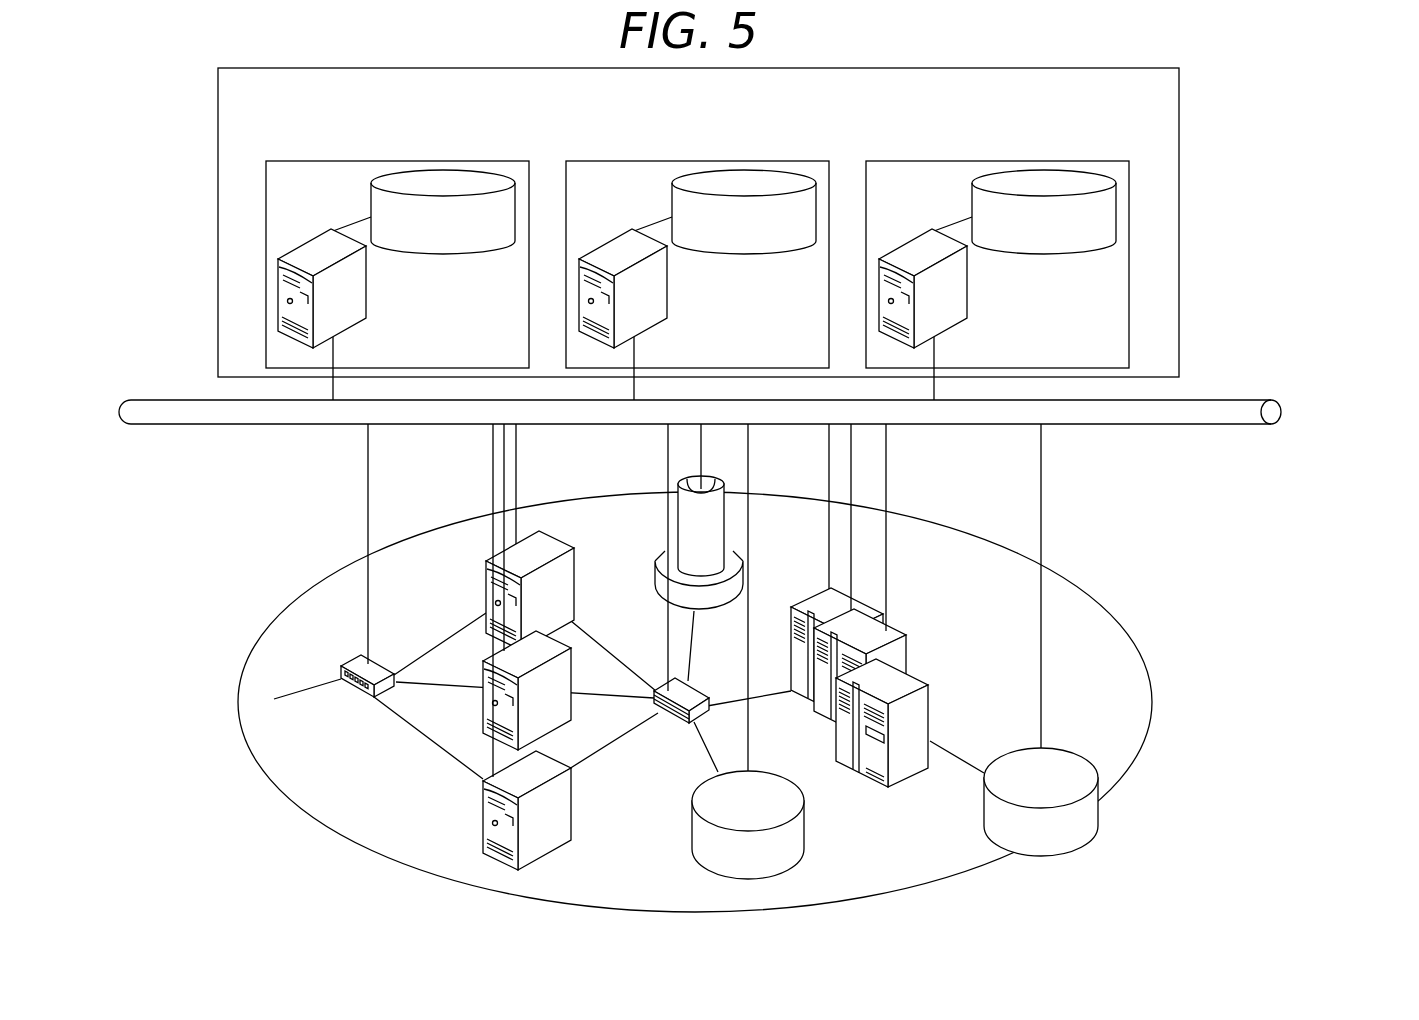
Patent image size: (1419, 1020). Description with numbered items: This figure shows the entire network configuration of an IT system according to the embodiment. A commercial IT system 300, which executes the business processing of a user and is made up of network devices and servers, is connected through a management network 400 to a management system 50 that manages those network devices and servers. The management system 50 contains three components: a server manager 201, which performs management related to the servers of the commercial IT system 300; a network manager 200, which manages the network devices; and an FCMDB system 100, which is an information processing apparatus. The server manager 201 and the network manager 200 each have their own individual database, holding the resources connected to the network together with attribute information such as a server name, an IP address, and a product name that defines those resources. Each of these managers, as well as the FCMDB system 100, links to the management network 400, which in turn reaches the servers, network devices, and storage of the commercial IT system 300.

The management system 50 is at (217, 91).
The server manager 201 is at (443, 160).
The network manager 200 is at (743, 160).
The FCMDB system 100 is at (1043, 160).
The management network 400 is at (1243, 399).
The commercial IT system 300 is at (1112, 617).